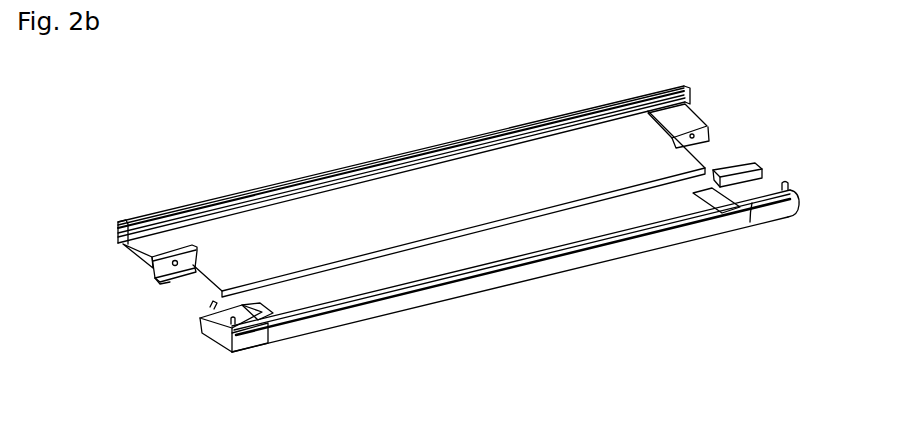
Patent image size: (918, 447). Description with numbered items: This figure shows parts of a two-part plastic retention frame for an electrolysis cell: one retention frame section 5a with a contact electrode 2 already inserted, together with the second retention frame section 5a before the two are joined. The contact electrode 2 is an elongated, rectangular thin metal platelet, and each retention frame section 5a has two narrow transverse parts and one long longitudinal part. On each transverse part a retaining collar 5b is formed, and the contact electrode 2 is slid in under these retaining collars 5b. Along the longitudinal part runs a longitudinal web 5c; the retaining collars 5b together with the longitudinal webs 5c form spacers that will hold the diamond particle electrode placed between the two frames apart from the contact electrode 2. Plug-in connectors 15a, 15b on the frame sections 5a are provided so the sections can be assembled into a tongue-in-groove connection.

The contact electrode 2 is at (567, 170).
The retention frame section 5a is at (770, 182).
The retaining collar 5b is at (165, 252).
The longitudinal web 5c is at (607, 118).
The plug-in connector 15a is at (168, 278).
The plug-in connector 15b is at (200, 322).